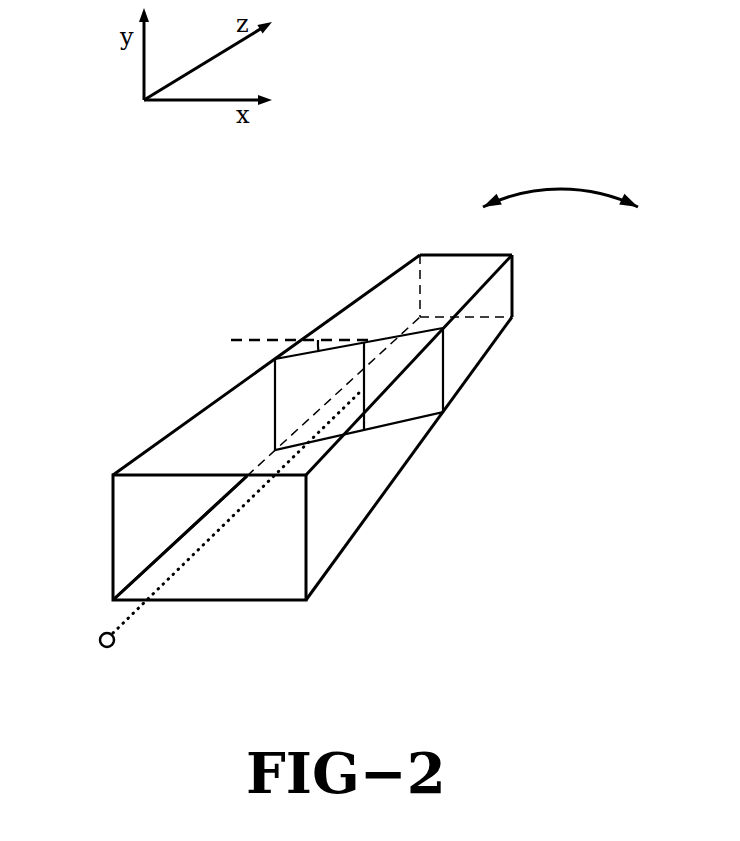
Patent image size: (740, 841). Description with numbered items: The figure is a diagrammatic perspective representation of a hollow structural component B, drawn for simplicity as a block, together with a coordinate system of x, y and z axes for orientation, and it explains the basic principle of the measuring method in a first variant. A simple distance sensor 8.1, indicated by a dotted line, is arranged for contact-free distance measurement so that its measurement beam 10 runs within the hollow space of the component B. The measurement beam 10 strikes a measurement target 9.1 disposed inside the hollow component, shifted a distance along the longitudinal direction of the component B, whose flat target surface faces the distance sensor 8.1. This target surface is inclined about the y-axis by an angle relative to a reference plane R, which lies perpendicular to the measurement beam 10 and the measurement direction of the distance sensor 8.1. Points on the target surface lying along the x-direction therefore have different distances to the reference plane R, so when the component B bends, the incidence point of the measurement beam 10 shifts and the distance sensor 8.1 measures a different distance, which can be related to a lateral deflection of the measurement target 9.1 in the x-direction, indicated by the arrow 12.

The distance sensor 8.1 is at (103, 648).
The measurement target 9.1 is at (383, 340).
The measurement beam 10 is at (180, 568).
The arrow 12 is at (567, 190).
The hollow structural component B is at (190, 417).
The reference plane R is at (138, 522).